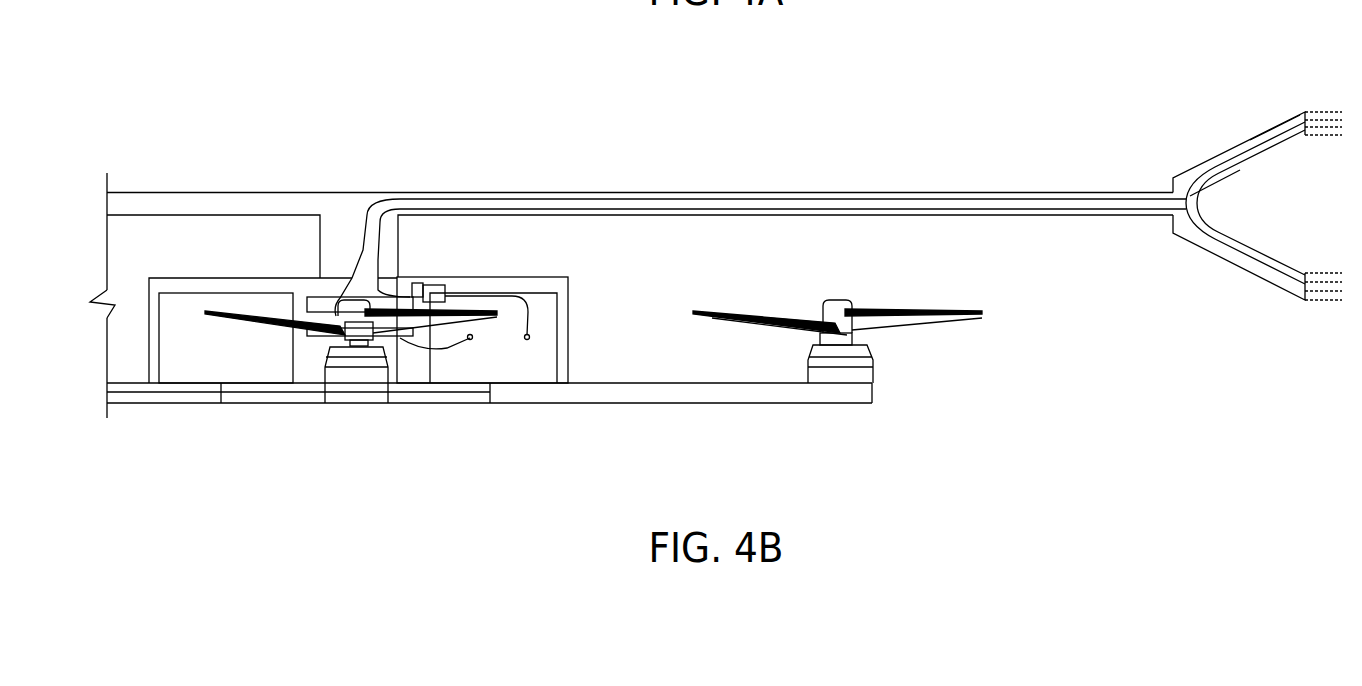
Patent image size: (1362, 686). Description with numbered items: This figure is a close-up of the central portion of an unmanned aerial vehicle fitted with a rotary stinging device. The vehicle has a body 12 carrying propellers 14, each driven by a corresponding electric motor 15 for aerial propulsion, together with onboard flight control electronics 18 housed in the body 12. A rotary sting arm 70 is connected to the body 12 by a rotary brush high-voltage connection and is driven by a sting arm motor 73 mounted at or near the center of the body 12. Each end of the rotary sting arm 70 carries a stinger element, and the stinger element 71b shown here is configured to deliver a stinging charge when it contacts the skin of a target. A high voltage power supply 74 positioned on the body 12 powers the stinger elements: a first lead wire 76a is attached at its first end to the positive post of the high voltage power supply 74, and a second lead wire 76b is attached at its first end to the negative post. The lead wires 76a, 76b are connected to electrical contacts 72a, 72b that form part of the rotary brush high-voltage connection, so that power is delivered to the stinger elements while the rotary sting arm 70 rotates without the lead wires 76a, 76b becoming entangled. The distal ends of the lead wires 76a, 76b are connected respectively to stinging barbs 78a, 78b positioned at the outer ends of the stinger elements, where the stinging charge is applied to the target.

The body 12 is at (558, 410).
The propeller 14 is at (962, 293).
The electric motor 15 is at (885, 362).
The onboard flight control electronics 18 is at (182, 286).
The rotary sting arm 70 is at (937, 188).
The stinger element 71b is at (1283, 96).
The electrical contact 72a is at (409, 357).
The electrical contact 72b is at (435, 278).
The sting arm motor 73 is at (317, 297).
The high voltage power supply 74 is at (568, 323).
The first lead wire 76a is at (362, 249).
The second lead wire 76b is at (377, 255).
The stinging barb 78a is at (1331, 148).
The stinging barb 78b is at (1333, 318).